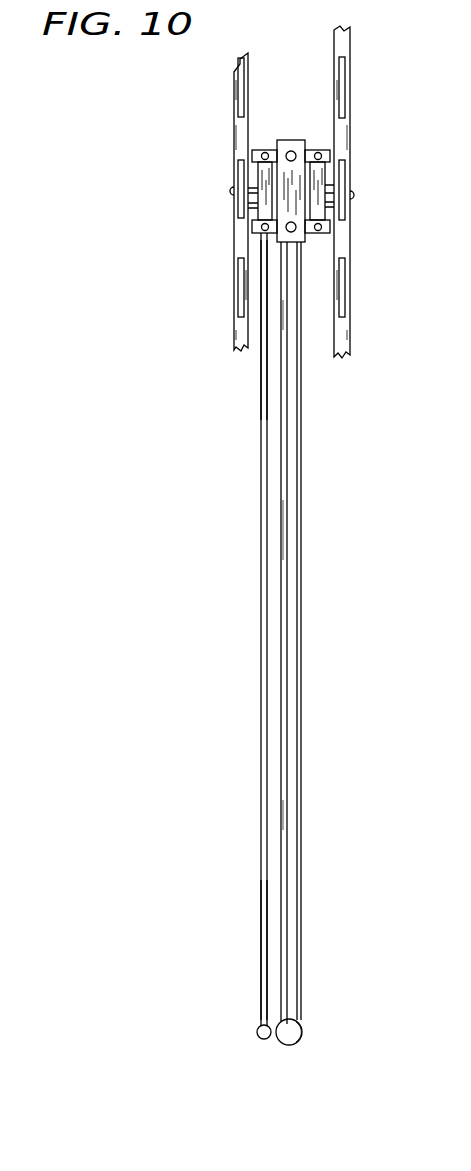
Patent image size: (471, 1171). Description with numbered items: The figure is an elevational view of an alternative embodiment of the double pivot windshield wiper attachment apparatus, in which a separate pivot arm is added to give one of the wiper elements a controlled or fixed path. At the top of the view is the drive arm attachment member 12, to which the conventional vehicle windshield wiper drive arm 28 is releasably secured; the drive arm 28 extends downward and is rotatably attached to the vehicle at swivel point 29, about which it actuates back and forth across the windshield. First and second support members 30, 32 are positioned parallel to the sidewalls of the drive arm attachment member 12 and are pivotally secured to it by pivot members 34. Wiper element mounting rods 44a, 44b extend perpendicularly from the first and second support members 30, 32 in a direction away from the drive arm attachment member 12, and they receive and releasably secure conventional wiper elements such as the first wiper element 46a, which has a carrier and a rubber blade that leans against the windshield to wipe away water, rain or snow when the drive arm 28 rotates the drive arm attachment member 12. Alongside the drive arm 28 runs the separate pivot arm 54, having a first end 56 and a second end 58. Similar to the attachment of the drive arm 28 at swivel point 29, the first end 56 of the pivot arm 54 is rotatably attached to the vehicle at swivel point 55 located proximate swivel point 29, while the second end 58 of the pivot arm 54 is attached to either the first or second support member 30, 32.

The drive arm attachment member 12 is at (290, 140).
The windshield wiper drive arm 28 is at (296, 716).
The swivel point 29 is at (300, 1027).
The first support member 30 is at (262, 207).
The second support member 32 is at (325, 175).
The pivot member 34 is at (266, 148).
The first wiper element mounting rod 44a is at (356, 195).
The second wiper element mounting rod 44b is at (229, 191).
The first wiper element 46a is at (233, 120).
The pivot arm 54 is at (261, 625).
The swivel point 55 is at (256, 1031).
The first end of pivot arm 56 is at (262, 352).
The second end of pivot arm 58 is at (262, 950).